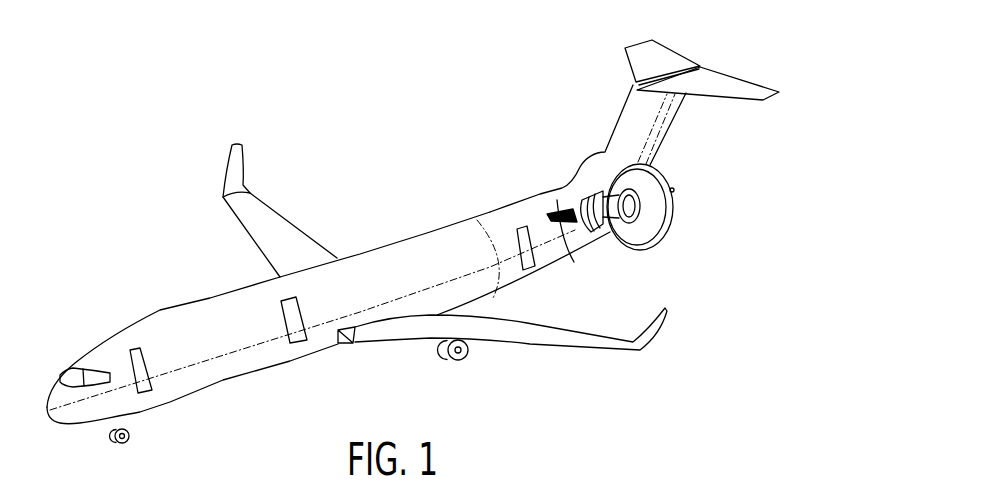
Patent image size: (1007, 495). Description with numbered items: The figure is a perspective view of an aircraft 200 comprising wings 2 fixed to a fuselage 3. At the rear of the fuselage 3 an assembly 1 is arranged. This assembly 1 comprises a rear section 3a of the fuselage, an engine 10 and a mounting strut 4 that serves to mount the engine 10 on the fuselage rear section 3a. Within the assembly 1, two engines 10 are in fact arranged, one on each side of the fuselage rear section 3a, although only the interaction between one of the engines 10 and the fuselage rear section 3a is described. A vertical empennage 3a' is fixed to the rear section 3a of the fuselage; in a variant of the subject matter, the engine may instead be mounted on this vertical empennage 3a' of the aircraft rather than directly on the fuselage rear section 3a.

The aircraft 200 is at (413, 224).
The assembly 1 is at (658, 249).
The wings 2 is at (285, 230).
The fuselage 3 is at (186, 310).
The rear section of the fuselage 3a is at (535, 200).
The vertical empennage 3a' is at (702, 102).
The mounting strut 4 is at (563, 222).
The engine 10 is at (625, 255).